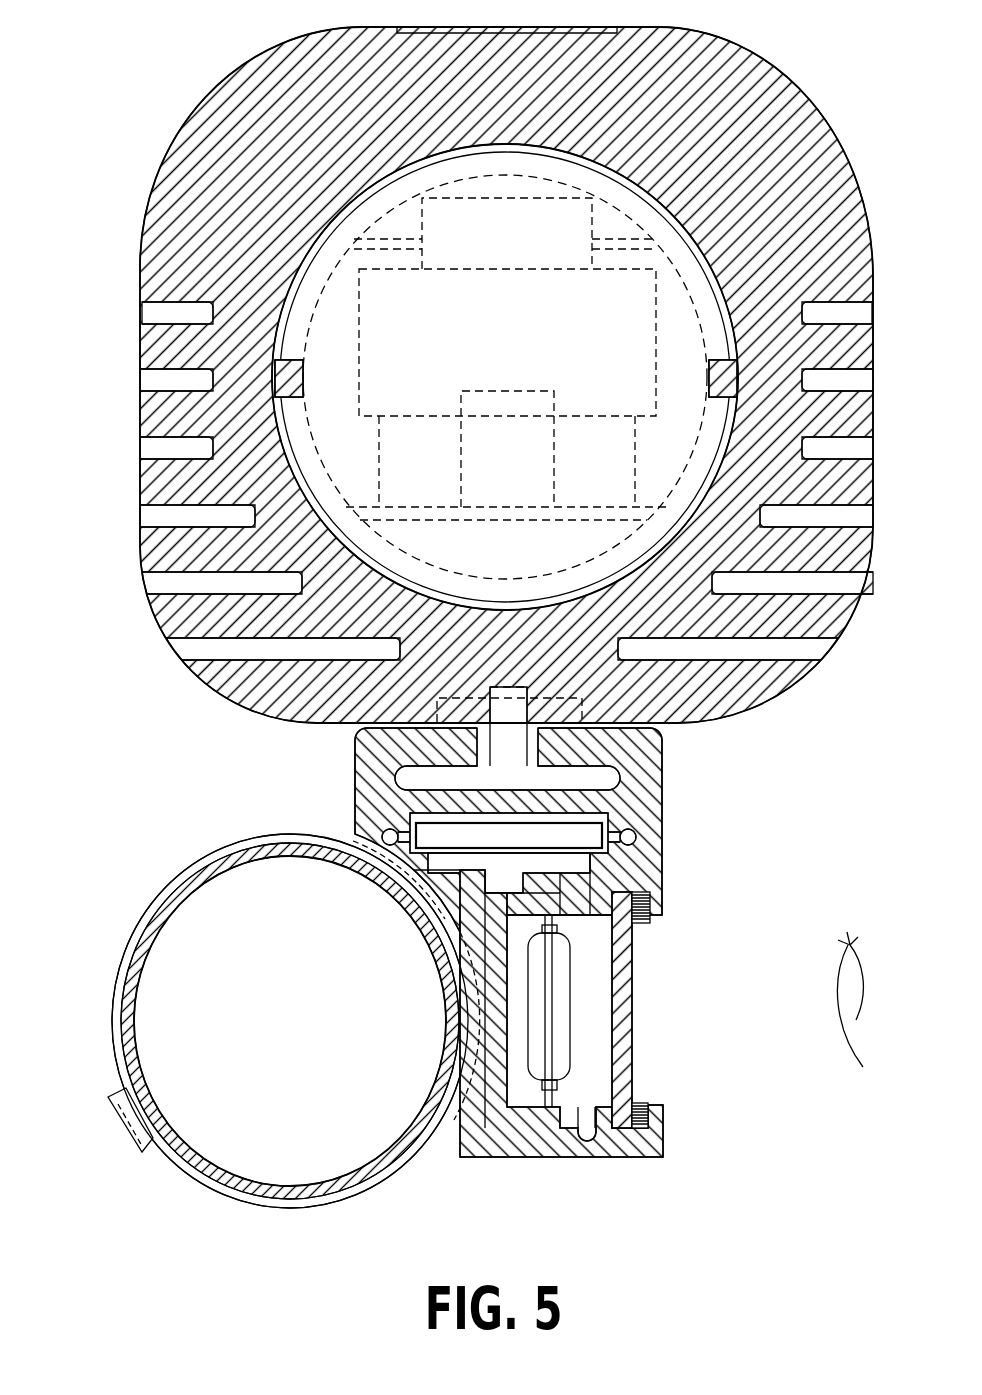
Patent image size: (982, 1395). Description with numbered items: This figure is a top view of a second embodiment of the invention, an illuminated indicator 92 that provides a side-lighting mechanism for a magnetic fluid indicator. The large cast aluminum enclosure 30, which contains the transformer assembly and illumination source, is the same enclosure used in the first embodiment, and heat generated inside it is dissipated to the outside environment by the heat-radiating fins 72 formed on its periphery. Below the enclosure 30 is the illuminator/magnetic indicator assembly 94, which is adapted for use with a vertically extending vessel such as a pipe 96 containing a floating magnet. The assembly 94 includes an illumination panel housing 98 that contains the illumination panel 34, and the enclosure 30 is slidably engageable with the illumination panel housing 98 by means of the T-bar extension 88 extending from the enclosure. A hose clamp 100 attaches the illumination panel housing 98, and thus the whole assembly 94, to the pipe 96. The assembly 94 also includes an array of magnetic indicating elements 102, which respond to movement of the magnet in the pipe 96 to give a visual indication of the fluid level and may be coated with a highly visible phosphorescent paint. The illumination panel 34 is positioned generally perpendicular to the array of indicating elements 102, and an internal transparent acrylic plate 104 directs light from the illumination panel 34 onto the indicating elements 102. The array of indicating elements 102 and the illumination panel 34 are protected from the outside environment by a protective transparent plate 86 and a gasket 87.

The enclosure 30 is at (213, 82).
The illuminated indicator 92 is at (769, 38).
The heat-radiating fins 72 is at (144, 482).
The illumination panel housing 98 is at (356, 772).
The T-bar extension 88 is at (580, 777).
The illuminator/magnetic indicator assembly 94 is at (700, 812).
The illumination panel 34 is at (483, 837).
The internal transparent plate 104 is at (573, 893).
The gasket 87 is at (640, 908).
The pipe 96 is at (158, 920).
The magnetic indicating elements 102 is at (538, 976).
The protective transparent plate 86 is at (623, 1035).
The hose clamp 100 is at (190, 1170).